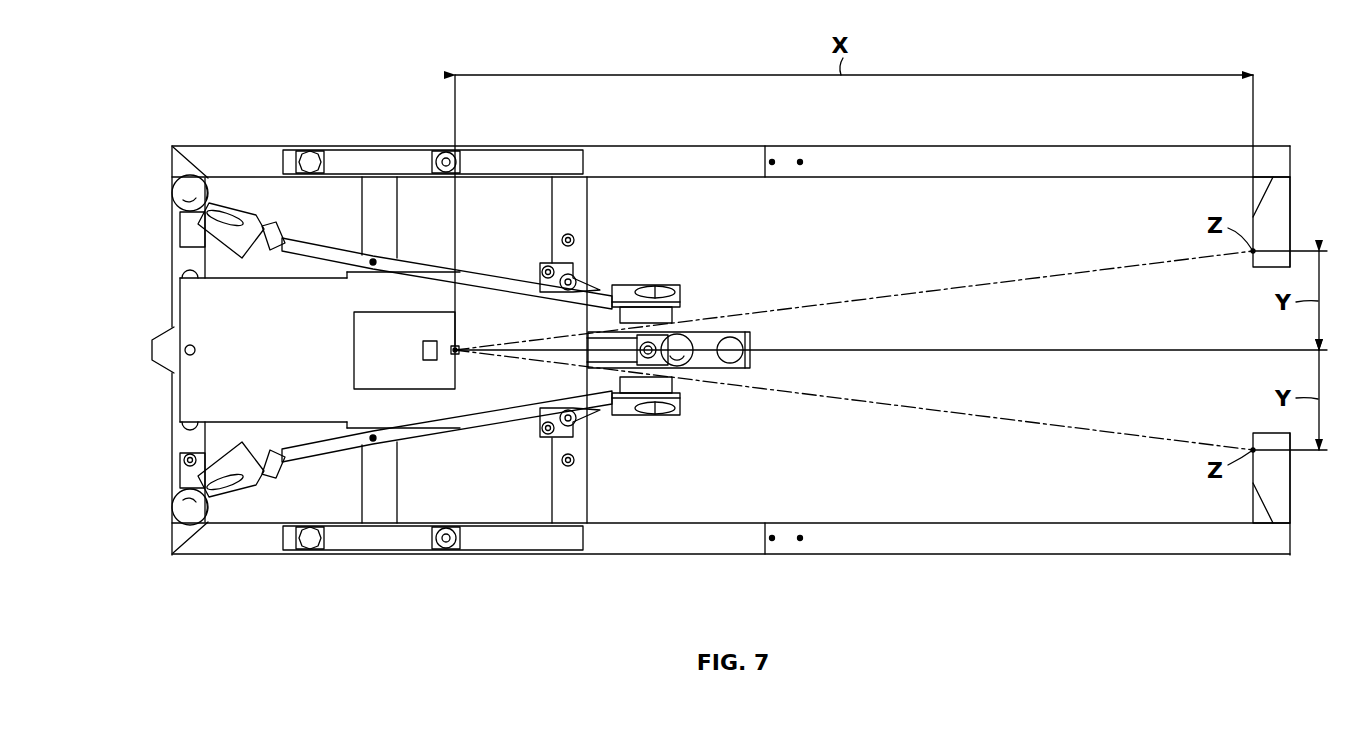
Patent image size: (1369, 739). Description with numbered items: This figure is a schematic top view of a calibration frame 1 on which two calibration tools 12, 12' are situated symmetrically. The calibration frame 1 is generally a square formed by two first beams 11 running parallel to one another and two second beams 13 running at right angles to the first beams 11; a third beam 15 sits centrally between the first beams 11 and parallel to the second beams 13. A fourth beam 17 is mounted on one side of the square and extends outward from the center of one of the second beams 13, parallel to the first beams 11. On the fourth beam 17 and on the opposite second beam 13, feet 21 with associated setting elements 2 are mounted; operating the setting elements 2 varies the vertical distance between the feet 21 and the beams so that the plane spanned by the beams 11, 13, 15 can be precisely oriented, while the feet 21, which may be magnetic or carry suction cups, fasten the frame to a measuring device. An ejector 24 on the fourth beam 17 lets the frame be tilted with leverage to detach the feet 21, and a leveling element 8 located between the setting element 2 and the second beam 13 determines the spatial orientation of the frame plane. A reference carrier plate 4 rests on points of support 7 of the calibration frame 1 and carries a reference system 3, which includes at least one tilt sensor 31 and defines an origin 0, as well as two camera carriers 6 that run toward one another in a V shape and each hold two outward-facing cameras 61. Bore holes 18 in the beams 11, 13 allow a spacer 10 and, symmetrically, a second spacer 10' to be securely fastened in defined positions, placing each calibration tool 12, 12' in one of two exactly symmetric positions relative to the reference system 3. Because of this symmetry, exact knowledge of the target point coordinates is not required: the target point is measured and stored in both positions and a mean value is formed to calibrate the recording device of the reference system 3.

The origin 0 is at (460, 346).
The calibration frame 1 is at (728, 237).
The setting element 2 is at (185, 190).
The reference system 3 is at (368, 335).
The reference carrier plate 4 is at (215, 388).
The camera carrier 6 is at (490, 285).
The points of support 7 is at (184, 278).
The leveling element 8 is at (595, 367).
The spacer 10 is at (731, 143).
The lower rail 10' is at (731, 557).
The first beam 11 is at (262, 162).
The calibration tool 12 is at (1300, 222).
The calibration tool 12' is at (1305, 478).
The second beam 13 is at (188, 253).
The third beam 15 is at (380, 200).
The fourth beam 17 is at (712, 335).
The bore hole 18 is at (575, 240).
The foot 21 is at (178, 198).
The ejector 24 is at (736, 357).
The tilt sensor 31 is at (423, 350).
The camera 61 is at (232, 212).